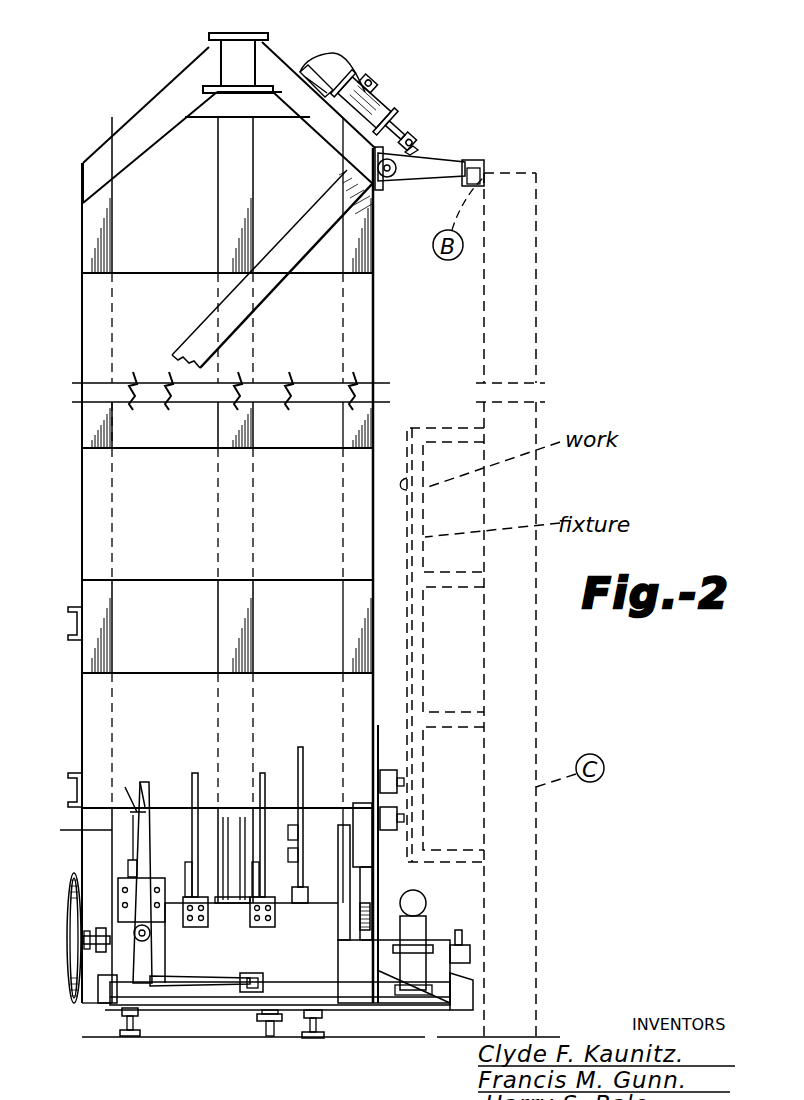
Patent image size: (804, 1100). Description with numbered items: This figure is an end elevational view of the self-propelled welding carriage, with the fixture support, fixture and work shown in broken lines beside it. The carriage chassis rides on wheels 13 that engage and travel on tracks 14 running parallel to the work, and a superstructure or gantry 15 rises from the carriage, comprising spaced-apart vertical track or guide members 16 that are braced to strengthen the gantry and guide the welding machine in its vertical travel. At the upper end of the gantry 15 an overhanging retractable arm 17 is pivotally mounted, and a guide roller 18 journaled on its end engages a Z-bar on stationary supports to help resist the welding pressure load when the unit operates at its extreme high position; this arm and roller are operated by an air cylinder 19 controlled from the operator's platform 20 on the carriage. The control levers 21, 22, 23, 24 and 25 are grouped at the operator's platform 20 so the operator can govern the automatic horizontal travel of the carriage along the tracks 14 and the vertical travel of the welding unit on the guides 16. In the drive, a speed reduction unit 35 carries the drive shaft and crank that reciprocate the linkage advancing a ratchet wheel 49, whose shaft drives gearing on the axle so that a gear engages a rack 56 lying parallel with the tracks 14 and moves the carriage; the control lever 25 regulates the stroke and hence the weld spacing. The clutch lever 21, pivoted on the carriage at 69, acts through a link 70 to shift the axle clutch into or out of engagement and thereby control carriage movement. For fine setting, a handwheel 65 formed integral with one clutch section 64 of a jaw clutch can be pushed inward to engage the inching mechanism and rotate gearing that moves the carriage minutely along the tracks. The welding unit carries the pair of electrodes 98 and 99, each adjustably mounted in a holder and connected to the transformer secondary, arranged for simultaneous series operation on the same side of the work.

The wheels 13 is at (122, 1013).
The tracks 14 is at (130, 1033).
The gantry 15 is at (97, 585).
The vertical track or guide members 16 is at (222, 620).
The overhanging retractable arm 17 is at (425, 178).
The guide roller 18 is at (474, 178).
The air cylinder 19 is at (390, 102).
The operator's platform 20 is at (223, 997).
The clutch lever 21 is at (140, 823).
The control lever 22 is at (192, 790).
The control lever 23 is at (263, 775).
The control lever 24 is at (303, 765).
The control lever 25 is at (378, 730).
The speed reduction unit 35 is at (425, 930).
The ratchet wheel 49 is at (373, 905).
The rack 56 is at (270, 1024).
The clutch section 64 is at (83, 947).
The handwheel 65 is at (72, 917).
The pivot 69 is at (133, 940).
The link 70 is at (167, 985).
The electrode 98 is at (404, 782).
The electrode 99 is at (404, 818).